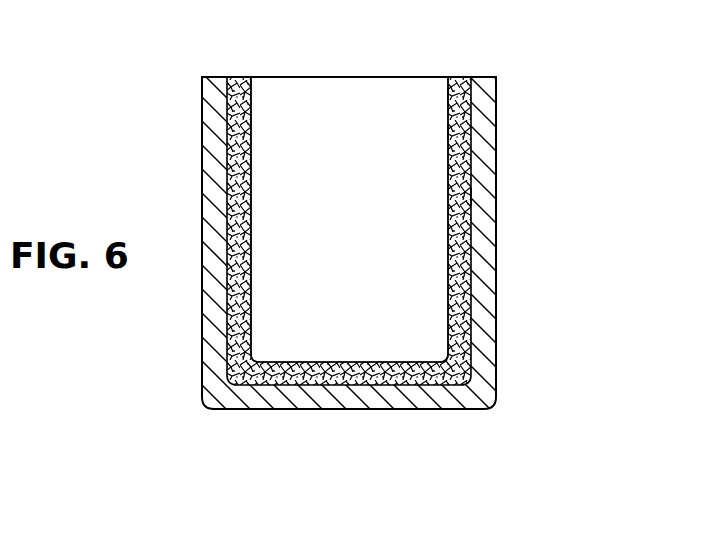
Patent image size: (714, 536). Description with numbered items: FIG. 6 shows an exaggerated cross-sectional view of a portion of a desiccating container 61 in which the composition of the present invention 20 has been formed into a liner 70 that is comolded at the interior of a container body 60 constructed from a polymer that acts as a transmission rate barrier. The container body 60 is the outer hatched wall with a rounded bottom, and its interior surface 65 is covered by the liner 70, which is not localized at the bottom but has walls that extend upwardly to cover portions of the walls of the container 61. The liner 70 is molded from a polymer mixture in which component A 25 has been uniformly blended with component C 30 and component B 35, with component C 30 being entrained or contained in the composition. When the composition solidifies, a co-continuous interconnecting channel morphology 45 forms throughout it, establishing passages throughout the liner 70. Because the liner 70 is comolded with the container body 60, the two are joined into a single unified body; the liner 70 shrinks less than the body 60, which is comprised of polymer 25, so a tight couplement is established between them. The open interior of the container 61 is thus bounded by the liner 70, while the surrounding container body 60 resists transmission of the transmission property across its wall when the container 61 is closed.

The composition of the present invention 20 is at (428, 198).
The component A 25 is at (450, 133).
The component C 30 is at (450, 97).
The component B 35 is at (472, 197).
The co-continuous interconnecting channel morphology 45 is at (469, 77).
The container body 60 is at (497, 272).
The container 61 is at (357, 224).
The interior surface 65 is at (473, 300).
The liner 70 is at (455, 358).